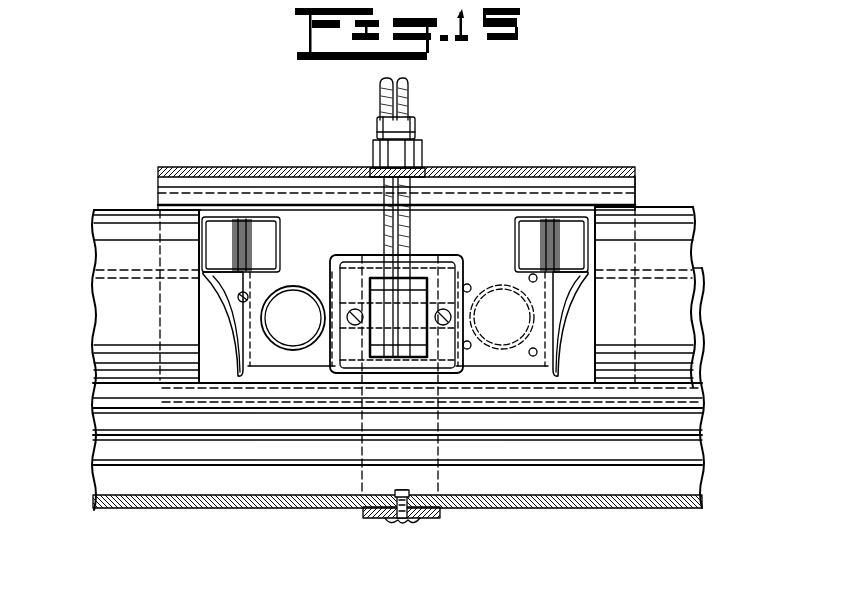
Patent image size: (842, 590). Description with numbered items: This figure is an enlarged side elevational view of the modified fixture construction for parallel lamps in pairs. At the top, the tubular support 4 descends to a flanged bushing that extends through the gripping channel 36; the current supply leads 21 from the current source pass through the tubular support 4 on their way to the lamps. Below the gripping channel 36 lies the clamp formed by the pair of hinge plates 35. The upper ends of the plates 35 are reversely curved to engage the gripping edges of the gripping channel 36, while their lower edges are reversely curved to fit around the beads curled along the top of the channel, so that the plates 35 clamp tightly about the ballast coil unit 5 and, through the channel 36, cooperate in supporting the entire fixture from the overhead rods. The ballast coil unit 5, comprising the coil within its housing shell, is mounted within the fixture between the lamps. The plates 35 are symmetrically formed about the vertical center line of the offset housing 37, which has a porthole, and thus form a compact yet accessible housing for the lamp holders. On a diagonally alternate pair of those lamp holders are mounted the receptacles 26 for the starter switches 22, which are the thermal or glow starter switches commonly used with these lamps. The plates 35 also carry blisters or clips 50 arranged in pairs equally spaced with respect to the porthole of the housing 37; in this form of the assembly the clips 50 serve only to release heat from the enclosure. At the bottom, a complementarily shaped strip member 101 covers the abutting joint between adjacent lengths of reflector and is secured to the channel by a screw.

The current supply leads 21 is at (408, 103).
The tubular support 4 is at (416, 131).
The gripping channel 36 is at (470, 171).
The hinge plates 35 is at (637, 228).
The ballast coil unit 5 is at (95, 240).
The clips 50 is at (270, 230).
The starter switch receptacles 26 is at (290, 276).
The starter switches 22 is at (518, 328).
The offset housing 37 is at (350, 373).
The strip member 101 is at (432, 520).